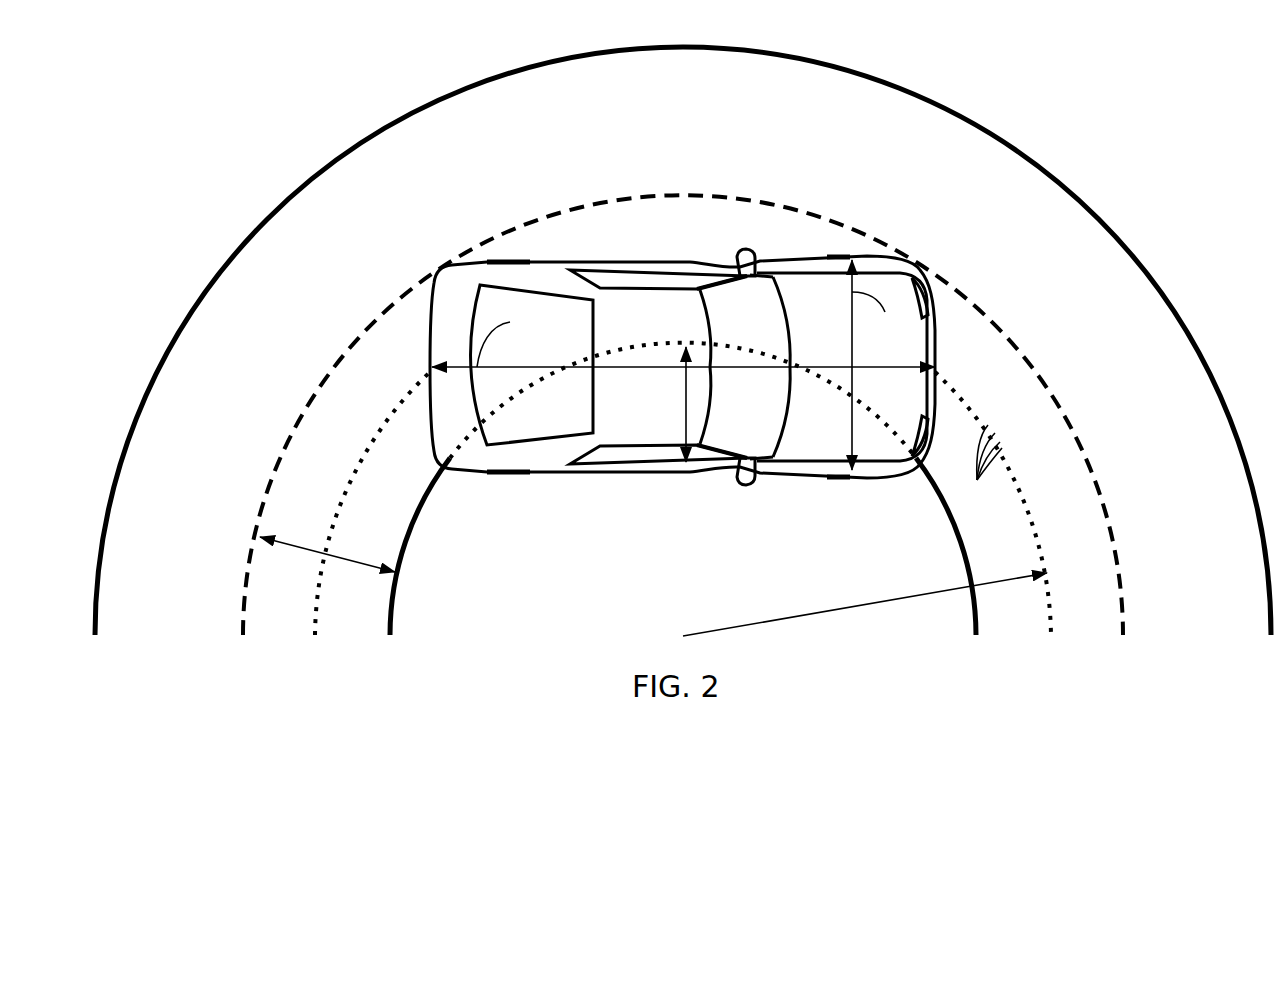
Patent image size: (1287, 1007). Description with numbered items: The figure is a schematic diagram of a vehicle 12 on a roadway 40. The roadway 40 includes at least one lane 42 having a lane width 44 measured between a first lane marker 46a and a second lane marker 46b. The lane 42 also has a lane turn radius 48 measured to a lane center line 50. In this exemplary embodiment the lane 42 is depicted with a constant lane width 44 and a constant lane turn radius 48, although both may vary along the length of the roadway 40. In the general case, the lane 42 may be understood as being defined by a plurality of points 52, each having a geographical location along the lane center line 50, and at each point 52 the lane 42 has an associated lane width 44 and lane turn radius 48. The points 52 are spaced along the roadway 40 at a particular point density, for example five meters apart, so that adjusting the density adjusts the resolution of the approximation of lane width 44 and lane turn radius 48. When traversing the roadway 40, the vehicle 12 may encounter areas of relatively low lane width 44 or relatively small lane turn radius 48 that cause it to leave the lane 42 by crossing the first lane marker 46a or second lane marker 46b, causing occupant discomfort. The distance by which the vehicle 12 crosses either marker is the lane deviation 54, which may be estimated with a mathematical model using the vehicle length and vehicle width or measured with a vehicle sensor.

The vehicle 12 is at (610, 261).
The roadway 40 is at (320, 164).
The lane 42 is at (335, 418).
The lane width 44 is at (347, 563).
The first lane marker 46a is at (276, 472).
The second lane marker 46b is at (423, 513).
The lane turn radius 48 is at (810, 612).
The lane center line 50 is at (1032, 488).
The plurality of points 52 is at (980, 467).
The lane deviation 54 is at (684, 388).